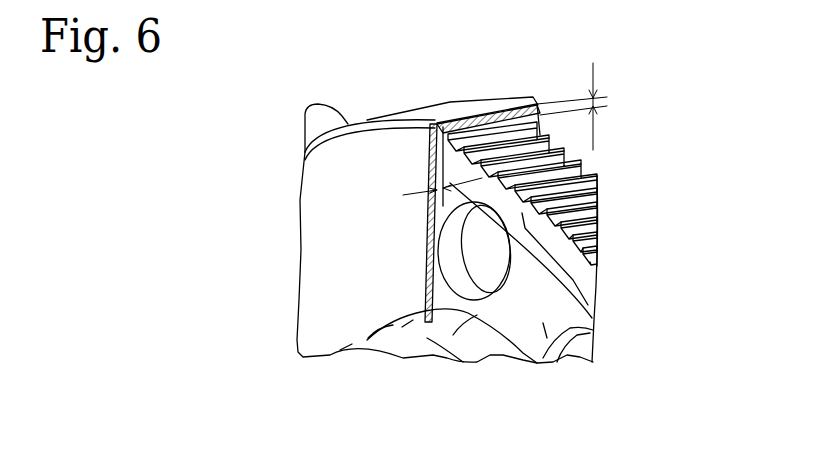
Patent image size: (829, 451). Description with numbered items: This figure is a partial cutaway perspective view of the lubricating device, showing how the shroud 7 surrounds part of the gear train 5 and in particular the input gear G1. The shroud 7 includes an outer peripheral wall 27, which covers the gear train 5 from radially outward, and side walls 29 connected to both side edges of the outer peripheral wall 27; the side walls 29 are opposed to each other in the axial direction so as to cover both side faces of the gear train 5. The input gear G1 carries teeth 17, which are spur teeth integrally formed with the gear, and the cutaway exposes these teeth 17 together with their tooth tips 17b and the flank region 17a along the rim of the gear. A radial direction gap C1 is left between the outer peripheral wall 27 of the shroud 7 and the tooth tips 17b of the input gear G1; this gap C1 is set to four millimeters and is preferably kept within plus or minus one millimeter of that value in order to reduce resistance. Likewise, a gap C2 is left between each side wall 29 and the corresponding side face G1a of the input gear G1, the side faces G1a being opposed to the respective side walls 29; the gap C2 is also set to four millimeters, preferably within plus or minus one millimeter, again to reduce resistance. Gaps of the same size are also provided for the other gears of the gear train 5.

The shroud 7 is at (365, 122).
The outer peripheral wall 27 is at (471, 112).
The side walls 29 is at (310, 283).
The teeth 17 is at (569, 242).
The tooth flank 17a is at (595, 248).
The tooth tips 17b is at (595, 222).
The input gear G1 is at (589, 381).
The gear train 5 is at (567, 363).
The side faces G1a is at (592, 322).
The radial direction gap C1 is at (594, 100).
The gap C2 is at (434, 190).